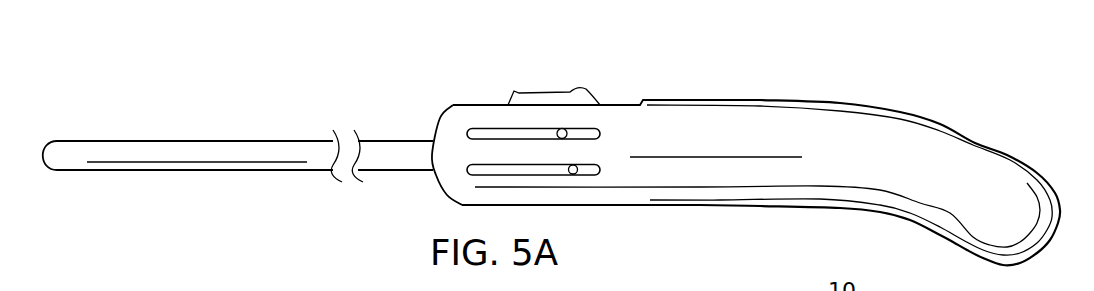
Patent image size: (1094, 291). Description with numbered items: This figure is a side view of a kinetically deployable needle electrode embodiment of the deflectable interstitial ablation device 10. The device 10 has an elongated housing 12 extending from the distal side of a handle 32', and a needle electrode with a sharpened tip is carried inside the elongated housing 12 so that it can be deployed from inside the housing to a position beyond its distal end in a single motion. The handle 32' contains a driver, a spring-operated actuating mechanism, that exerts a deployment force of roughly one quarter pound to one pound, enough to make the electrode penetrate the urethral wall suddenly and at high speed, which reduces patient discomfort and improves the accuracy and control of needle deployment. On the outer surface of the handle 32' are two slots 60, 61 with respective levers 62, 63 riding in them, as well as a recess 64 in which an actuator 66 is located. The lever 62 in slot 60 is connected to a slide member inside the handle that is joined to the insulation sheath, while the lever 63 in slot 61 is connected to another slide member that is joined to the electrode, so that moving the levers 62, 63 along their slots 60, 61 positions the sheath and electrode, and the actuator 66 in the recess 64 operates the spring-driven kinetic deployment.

The deflectable interstitial ablation device 10 is at (788, 76).
The elongated housing 12 is at (203, 141).
The handle 32' is at (746, 165).
The slot 60 is at (594, 172).
The slot 61 is at (482, 134).
The lever 62 is at (572, 175).
The lever 63 is at (562, 128).
The recess 64 is at (625, 104).
The actuator 66 is at (593, 92).